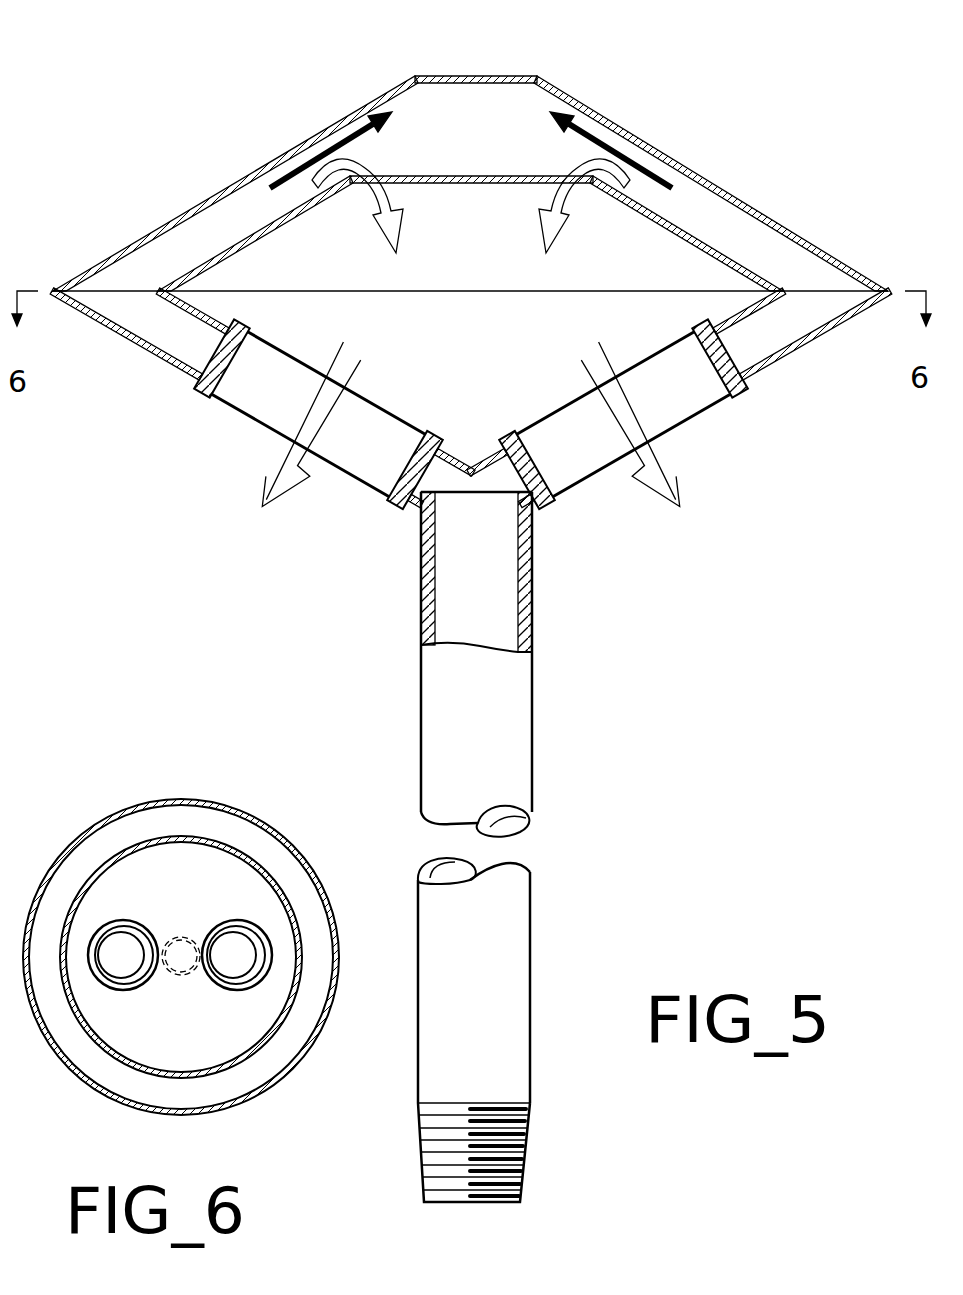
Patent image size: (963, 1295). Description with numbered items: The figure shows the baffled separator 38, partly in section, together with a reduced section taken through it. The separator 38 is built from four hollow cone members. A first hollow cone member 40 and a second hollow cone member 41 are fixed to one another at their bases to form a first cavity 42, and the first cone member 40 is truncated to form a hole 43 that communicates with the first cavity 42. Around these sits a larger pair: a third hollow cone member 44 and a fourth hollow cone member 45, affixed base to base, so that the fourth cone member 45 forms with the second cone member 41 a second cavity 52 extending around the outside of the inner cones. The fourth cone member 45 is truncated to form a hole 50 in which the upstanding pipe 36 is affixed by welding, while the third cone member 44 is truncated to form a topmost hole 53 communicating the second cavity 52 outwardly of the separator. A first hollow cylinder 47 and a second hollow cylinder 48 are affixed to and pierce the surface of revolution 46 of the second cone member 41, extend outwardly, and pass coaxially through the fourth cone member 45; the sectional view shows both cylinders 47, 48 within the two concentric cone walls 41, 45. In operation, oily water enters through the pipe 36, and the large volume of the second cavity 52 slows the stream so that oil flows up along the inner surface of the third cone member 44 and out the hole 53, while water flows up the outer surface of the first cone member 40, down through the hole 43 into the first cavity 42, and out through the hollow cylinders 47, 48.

In FIG. 5, the upstanding pipe 36 is at (532, 760).
In FIG. 5, the baffled separator 38 is at (628, 72).
In FIG. 5, the first hollow cone member 40 is at (275, 228).
In FIG. 5, the second hollow cone member 41 is at (443, 453).
In FIG. 6, the second hollow cone member 41 is at (246, 853).
In FIG. 5, the first cavity 42 is at (503, 330).
In FIG. 5, the hole 43 is at (458, 182).
In FIG. 5, the third hollow cone member 44 is at (710, 178).
In FIG. 5, the fourth hollow cone member 45 is at (787, 353).
In FIG. 6, the fourth hollow cone member 45 is at (160, 797).
In FIG. 5, the surface of revolution 46 is at (200, 322).
In FIG. 5, the first hollow cylinder 47 is at (207, 400).
In FIG. 6, the first hollow cylinder 47 is at (137, 990).
In FIG. 5, the second hollow cylinder 48 is at (567, 503).
In FIG. 6, the second hollow cylinder 48 is at (219, 990).
In FIG. 5, the hole 50 is at (540, 502).
In FIG. 5, the second cavity 52 is at (765, 255).
In FIG. 5, the hole 53 is at (418, 75).